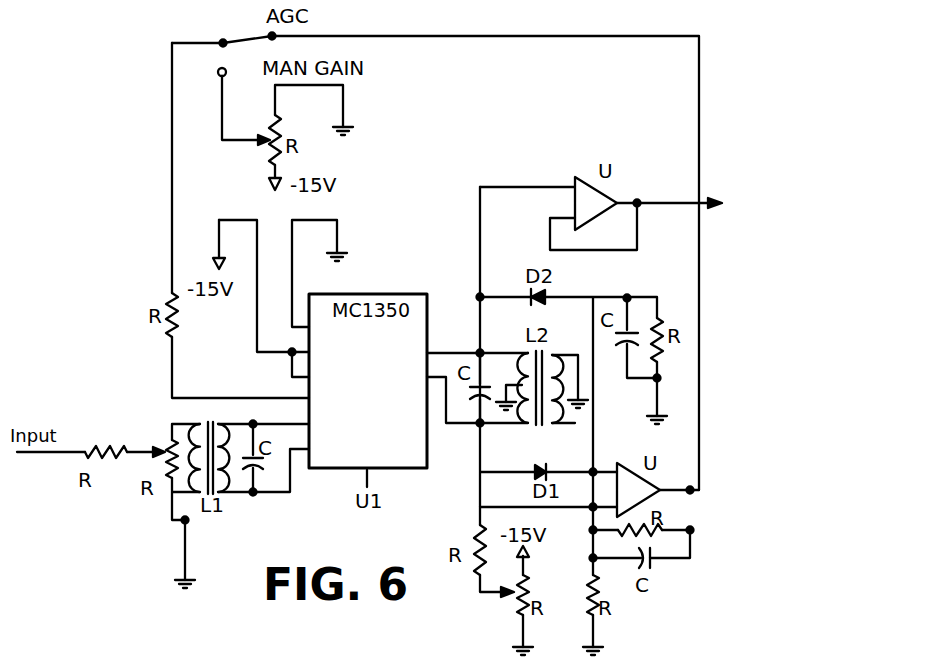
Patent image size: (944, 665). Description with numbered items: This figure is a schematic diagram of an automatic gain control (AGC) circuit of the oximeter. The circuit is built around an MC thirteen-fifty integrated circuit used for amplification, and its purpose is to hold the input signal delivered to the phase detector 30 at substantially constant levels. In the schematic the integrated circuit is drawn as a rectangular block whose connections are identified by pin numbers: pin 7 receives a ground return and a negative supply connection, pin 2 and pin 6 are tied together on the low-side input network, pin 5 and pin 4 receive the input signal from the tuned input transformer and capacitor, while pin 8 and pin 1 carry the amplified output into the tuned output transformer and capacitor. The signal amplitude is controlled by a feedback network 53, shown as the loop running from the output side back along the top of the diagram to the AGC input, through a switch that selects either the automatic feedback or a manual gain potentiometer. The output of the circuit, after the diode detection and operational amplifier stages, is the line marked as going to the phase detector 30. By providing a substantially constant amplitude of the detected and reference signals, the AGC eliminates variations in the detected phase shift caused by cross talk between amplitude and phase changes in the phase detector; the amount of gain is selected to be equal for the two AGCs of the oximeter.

The feedback network 53 is at (444, 36).
The phase detector 30 is at (779, 215).
The pin 1 of MC1350 1 is at (471, 395).
The pin 2 of MC1350 2 is at (271, 291).
The pin 4 of MC1350 4 is at (271, 466).
The pin 5 of MC1350 5 is at (271, 423).
The pin 6 of MC1350 6 is at (308, 369).
The pin 7 of MC1350 7 is at (319, 278).
The pin 8 of MC1350 8 is at (468, 353).